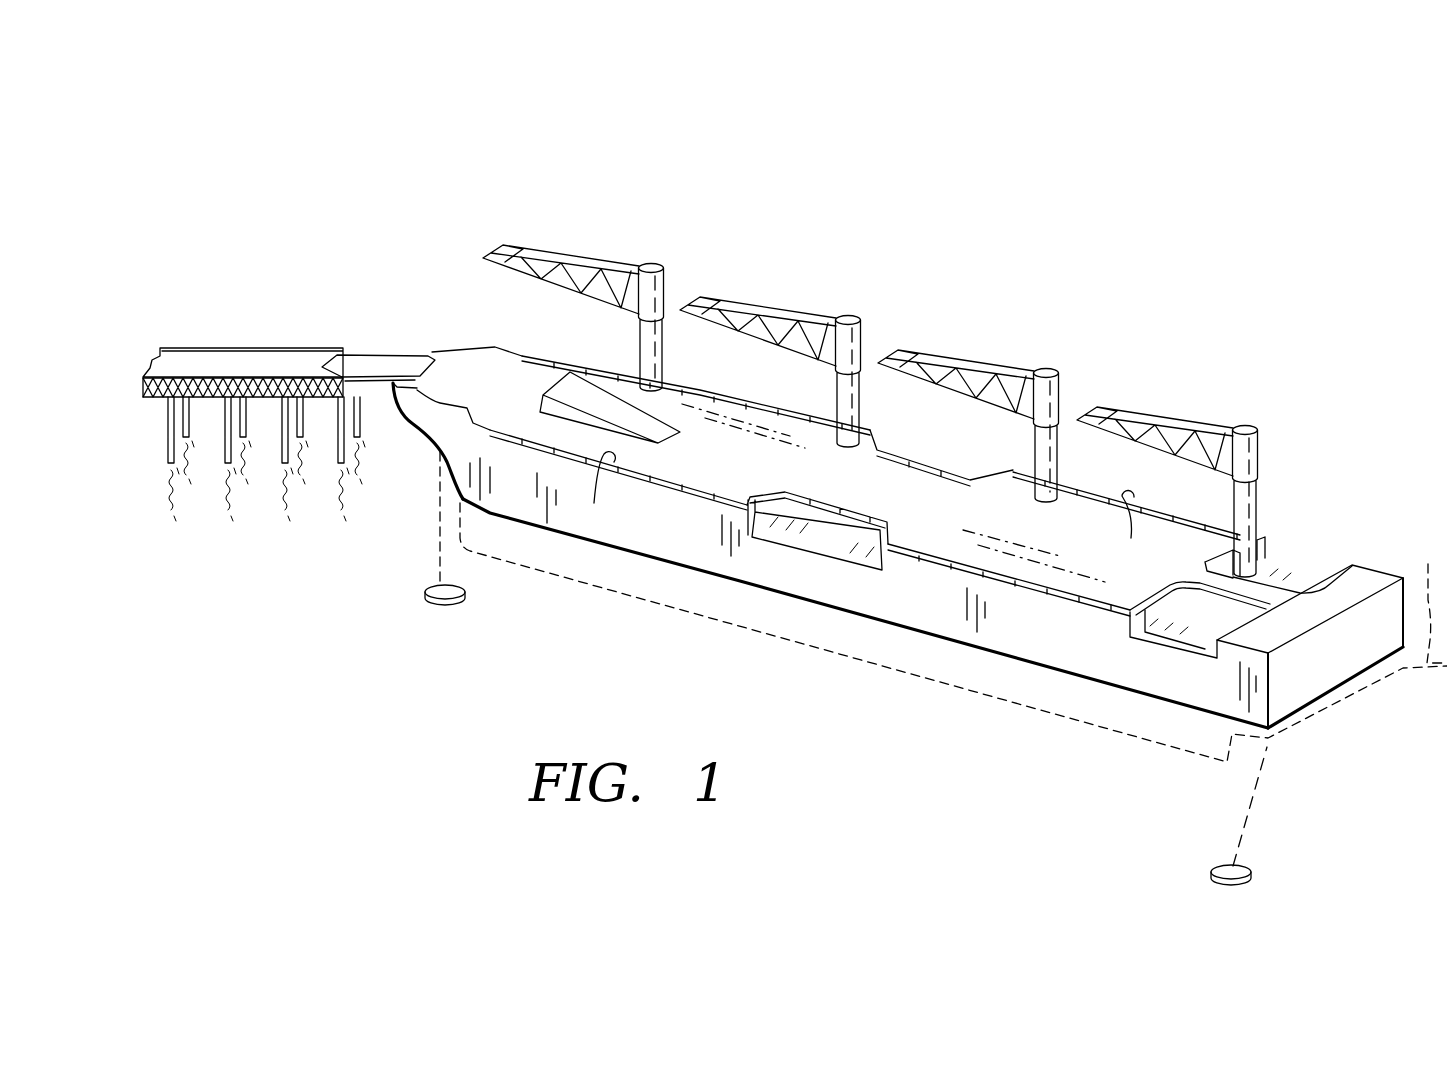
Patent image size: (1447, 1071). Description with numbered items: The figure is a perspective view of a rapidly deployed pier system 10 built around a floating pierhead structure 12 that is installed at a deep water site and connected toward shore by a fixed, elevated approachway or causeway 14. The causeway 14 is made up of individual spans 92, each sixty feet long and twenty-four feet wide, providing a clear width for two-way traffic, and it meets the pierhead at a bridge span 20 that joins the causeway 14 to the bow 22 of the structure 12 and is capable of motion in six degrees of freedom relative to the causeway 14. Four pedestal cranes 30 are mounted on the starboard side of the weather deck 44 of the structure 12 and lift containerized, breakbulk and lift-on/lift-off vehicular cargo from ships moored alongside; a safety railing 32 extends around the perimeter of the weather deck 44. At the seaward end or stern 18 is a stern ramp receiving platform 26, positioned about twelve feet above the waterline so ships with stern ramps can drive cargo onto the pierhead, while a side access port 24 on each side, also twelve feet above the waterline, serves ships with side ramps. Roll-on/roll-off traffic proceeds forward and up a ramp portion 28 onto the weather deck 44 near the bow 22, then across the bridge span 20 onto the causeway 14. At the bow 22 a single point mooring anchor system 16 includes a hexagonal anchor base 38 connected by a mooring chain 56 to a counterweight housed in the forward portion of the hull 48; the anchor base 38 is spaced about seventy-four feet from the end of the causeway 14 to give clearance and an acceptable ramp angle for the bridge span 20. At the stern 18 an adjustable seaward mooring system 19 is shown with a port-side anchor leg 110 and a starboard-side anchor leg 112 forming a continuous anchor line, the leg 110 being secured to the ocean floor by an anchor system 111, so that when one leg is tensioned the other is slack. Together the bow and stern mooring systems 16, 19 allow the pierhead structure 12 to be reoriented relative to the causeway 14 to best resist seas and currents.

The rapidly deployed pier system 10 is at (360, 207).
The floating pierhead structure 12 is at (1106, 359).
The approachway/causeway 14 is at (234, 348).
The single point mooring anchor system 16 is at (417, 457).
The stern 18 is at (1373, 698).
The adjustable seaward mooring system 19 is at (1277, 833).
The bridge span 20 is at (378, 358).
The bow 22 is at (443, 358).
The side access port 24 is at (930, 452).
The stern ramp receiving platform 26 is at (1303, 568).
The ramp portion 28 is at (542, 402).
The pedestal crane 30 is at (650, 264).
The safety railing 32 is at (863, 513).
The anchor base 38 is at (462, 588).
The weather deck 44 is at (735, 472).
The hull 48 is at (870, 598).
The mooring chain 56 is at (440, 558).
The span 92 is at (292, 359).
The anchor leg 110 is at (1253, 807).
The anchor system 111 is at (1213, 880).
The anchor leg 112 is at (1427, 596).